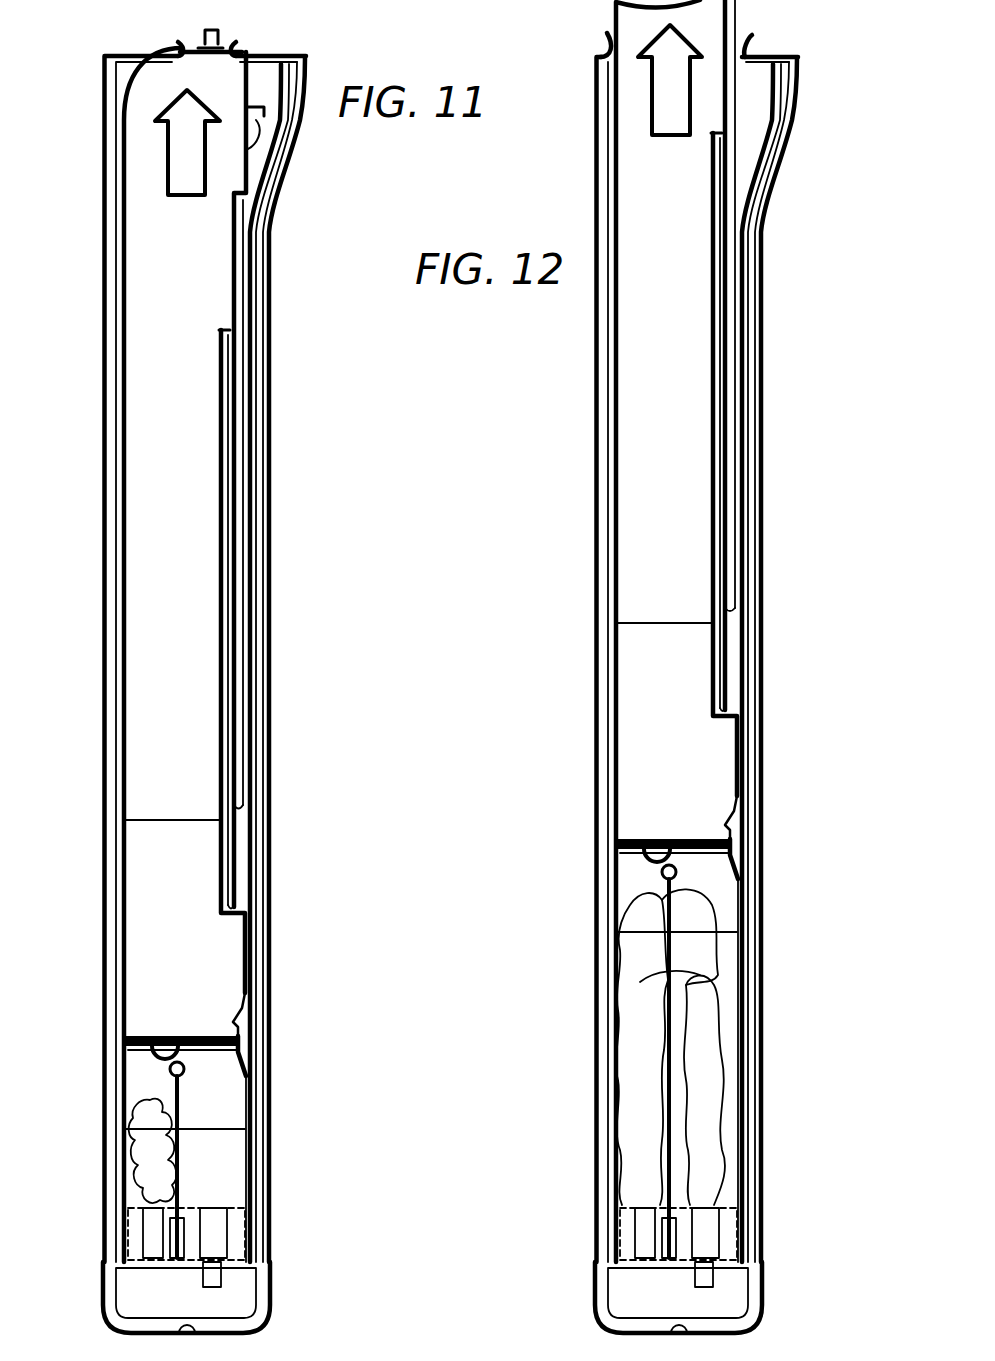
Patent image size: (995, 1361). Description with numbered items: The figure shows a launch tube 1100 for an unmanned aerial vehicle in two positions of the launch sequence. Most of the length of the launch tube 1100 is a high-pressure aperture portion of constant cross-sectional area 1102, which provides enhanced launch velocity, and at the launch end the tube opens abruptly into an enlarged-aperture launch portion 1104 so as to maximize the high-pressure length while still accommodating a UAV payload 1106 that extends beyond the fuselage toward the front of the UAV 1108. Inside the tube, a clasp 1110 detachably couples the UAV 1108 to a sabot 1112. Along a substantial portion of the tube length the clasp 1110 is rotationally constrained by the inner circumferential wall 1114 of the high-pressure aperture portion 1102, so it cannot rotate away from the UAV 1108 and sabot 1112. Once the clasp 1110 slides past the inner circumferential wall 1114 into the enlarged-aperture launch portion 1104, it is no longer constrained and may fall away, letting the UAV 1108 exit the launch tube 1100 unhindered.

In FIG. 11, the launch tube 1100 is at (201, 681).
In FIG. 12, the launch tube 1100 is at (688, 666).
In FIG. 11, the high-pressure aperture portion of constant cross-sectional area 1102 is at (92, 1262).
In FIG. 12, the high-pressure aperture portion of constant cross-sectional area 1102 is at (696, 683).
In FIG. 12, the enlarged-aperture launch portion 1104 is at (810, 232).
In FIG. 11, the UAV payload 1106 is at (258, 121).
In FIG. 11, the UAV 1108 is at (194, 513).
In FIG. 12, the UAV 1108 is at (724, 488).
In FIG. 11, the clasp 1110 is at (238, 1048).
In FIG. 12, the clasp 1110 is at (732, 850).
In FIG. 11, the sabot 1112 is at (225, 1107).
In FIG. 12, the sabot 1112 is at (669, 1061).
In FIG. 11, the inner circumferential wall 1114 is at (247, 1156).
In FIG. 12, the inner circumferential wall 1114 is at (742, 948).